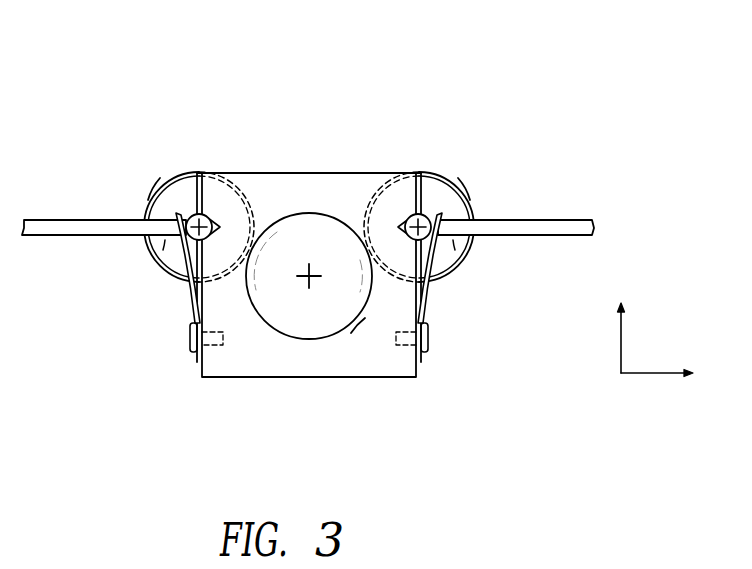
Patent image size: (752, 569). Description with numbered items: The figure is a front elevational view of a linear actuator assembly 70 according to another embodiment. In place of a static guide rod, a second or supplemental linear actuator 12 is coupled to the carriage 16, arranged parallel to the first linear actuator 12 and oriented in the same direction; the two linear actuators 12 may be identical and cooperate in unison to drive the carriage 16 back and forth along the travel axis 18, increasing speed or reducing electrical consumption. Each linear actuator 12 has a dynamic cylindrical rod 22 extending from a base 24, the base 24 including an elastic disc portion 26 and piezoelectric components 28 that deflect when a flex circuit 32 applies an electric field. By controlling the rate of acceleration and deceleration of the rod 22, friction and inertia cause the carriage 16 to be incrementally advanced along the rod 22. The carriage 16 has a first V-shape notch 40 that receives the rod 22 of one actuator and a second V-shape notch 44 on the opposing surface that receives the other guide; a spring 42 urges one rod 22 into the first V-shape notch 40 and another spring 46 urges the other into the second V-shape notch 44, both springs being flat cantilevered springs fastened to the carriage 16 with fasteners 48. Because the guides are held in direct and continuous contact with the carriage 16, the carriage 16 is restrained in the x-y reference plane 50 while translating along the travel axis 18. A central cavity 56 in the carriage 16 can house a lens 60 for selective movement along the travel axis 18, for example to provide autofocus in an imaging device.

The linear actuator assembly 70 is at (533, 50).
The linear actuator 12 is at (112, 250).
The carriage 16 is at (301, 180).
The travel axis 18 is at (311, 283).
The dynamic cylindrical rod 22 is at (178, 172).
The base 24 is at (207, 148).
The elastic disc portion 26 is at (160, 178).
The piezoelectric components 28 is at (163, 250).
The flex circuit 32 is at (85, 219).
The first V-shape notch 40 is at (218, 222).
The spring 42 is at (195, 268).
The second V-shape notch 44 is at (400, 222).
The spring 46 is at (440, 270).
The fasteners 48 is at (190, 338).
The x-y reference plane 50 is at (650, 373).
The central cavity 56 is at (351, 333).
The lens 60 is at (270, 313).